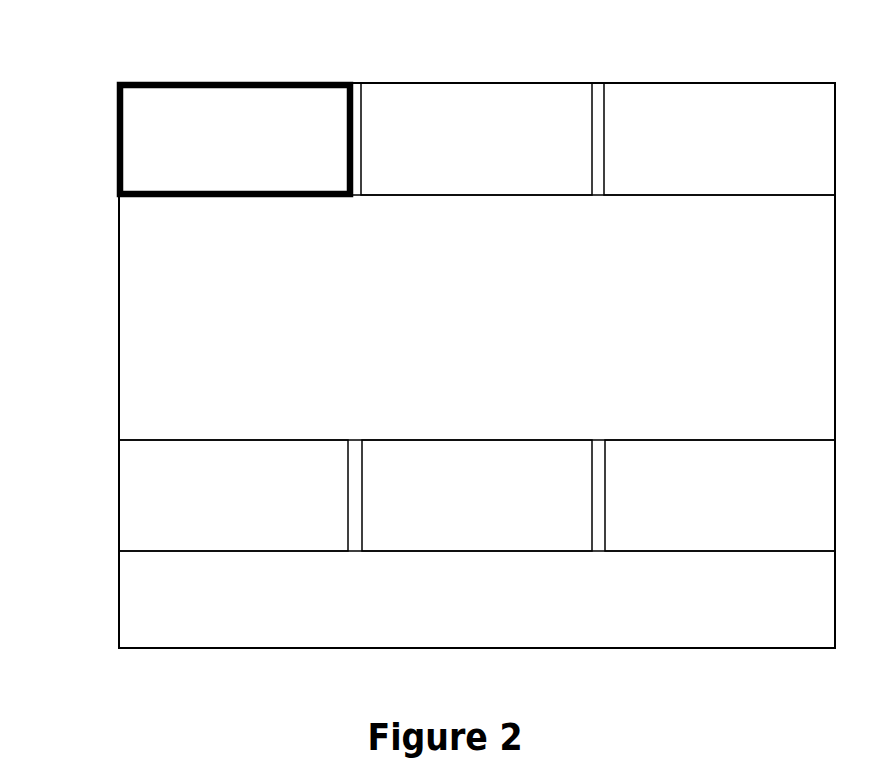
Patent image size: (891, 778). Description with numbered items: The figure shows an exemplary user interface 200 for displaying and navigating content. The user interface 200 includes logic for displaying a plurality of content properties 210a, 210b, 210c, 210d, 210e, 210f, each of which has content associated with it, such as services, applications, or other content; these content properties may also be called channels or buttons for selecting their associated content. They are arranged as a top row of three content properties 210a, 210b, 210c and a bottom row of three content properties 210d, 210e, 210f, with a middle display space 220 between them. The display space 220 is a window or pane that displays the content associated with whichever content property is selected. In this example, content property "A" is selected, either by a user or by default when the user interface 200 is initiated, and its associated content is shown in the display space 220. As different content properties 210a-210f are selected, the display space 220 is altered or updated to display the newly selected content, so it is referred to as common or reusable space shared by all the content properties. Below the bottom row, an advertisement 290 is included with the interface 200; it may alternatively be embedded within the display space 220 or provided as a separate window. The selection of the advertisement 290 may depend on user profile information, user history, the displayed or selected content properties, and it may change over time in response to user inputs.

The user interface 200 is at (90, 134).
The content property 210a is at (173, 125).
The content property 210b is at (402, 125).
The content property 210c is at (645, 125).
The content property 210d is at (133, 466).
The content property 210e is at (578, 533).
The content property 210f is at (686, 533).
The display space 220 is at (150, 299).
The advertisement 290 is at (133, 632).